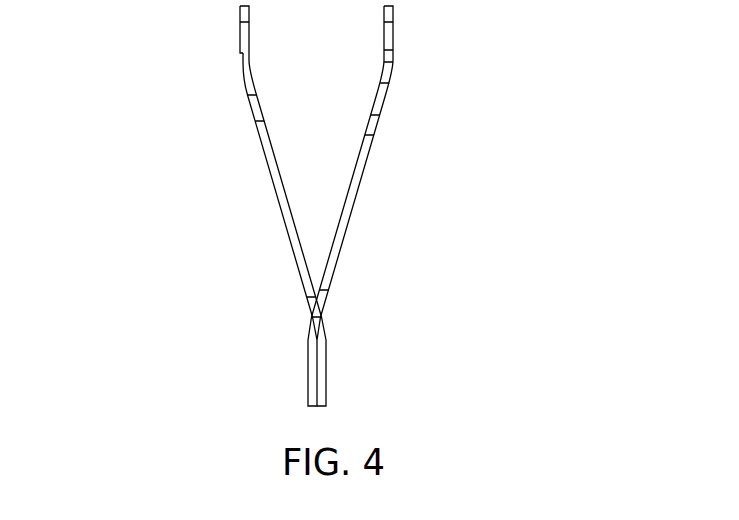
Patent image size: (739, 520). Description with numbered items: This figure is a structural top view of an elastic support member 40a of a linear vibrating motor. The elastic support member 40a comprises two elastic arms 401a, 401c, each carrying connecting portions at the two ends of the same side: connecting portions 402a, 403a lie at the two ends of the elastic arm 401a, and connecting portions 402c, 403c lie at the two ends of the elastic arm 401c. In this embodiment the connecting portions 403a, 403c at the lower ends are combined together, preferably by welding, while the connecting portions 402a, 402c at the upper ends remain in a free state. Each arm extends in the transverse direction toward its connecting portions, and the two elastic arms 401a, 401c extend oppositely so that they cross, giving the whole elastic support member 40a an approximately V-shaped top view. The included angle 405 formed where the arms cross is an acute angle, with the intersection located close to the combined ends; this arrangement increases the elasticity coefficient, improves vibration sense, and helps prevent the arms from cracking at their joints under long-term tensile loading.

The elastic support member 40a is at (382, 250).
The elastic arm 401a is at (363, 198).
The elastic arm 401c is at (265, 201).
The connecting portion 402a is at (395, 29).
The connecting portion 402c is at (232, 32).
The connecting portion 403a is at (317, 391).
The connecting portion 403c is at (317, 373).
The transverse cross included angle 405 is at (296, 262).